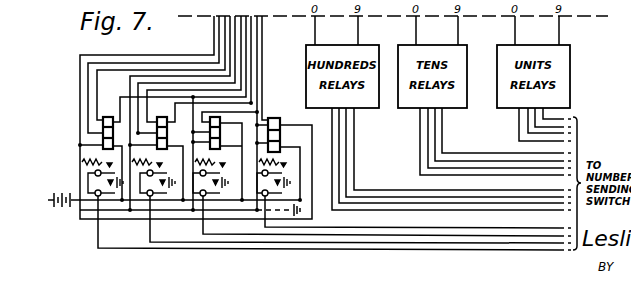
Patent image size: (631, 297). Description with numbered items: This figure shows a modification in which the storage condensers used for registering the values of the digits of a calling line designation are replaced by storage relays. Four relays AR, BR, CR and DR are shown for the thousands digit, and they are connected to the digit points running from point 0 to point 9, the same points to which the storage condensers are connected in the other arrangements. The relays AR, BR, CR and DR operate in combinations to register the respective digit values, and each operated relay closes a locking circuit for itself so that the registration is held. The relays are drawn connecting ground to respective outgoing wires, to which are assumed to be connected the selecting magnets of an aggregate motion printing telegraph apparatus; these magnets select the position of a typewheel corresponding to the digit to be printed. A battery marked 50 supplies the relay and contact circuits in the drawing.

The point 0 is at (196, 111).
The point 9 is at (263, 61).
The 50-volt battery 50 is at (59, 189).
The storage relay AR is at (106, 124).
The storage relay BR is at (160, 124).
The storage relay CR is at (224, 133).
The storage relay DR is at (283, 135).